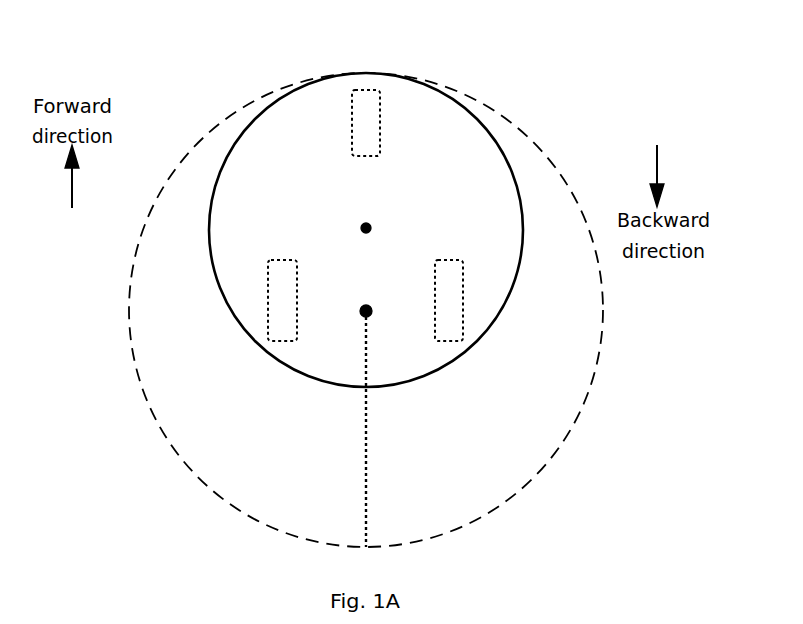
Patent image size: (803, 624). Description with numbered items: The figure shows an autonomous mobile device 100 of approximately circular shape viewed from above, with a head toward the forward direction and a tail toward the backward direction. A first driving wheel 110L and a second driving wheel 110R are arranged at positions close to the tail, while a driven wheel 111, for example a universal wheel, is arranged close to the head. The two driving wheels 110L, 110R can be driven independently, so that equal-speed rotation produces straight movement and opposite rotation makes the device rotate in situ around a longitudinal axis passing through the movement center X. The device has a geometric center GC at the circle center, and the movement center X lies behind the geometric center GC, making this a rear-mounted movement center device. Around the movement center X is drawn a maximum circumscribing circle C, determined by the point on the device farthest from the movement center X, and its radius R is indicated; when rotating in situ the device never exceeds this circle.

The autonomous mobile device 100 is at (550, 118).
The maximum circumscribing circle C is at (200, 142).
The driven wheel 111 is at (353, 90).
The first driving wheel 110L is at (280, 341).
The second driving wheel 110R is at (459, 341).
The geometric center GC is at (386, 230).
The movement center X is at (350, 304).
The radius of the maximum circumscribing circle R is at (383, 432).